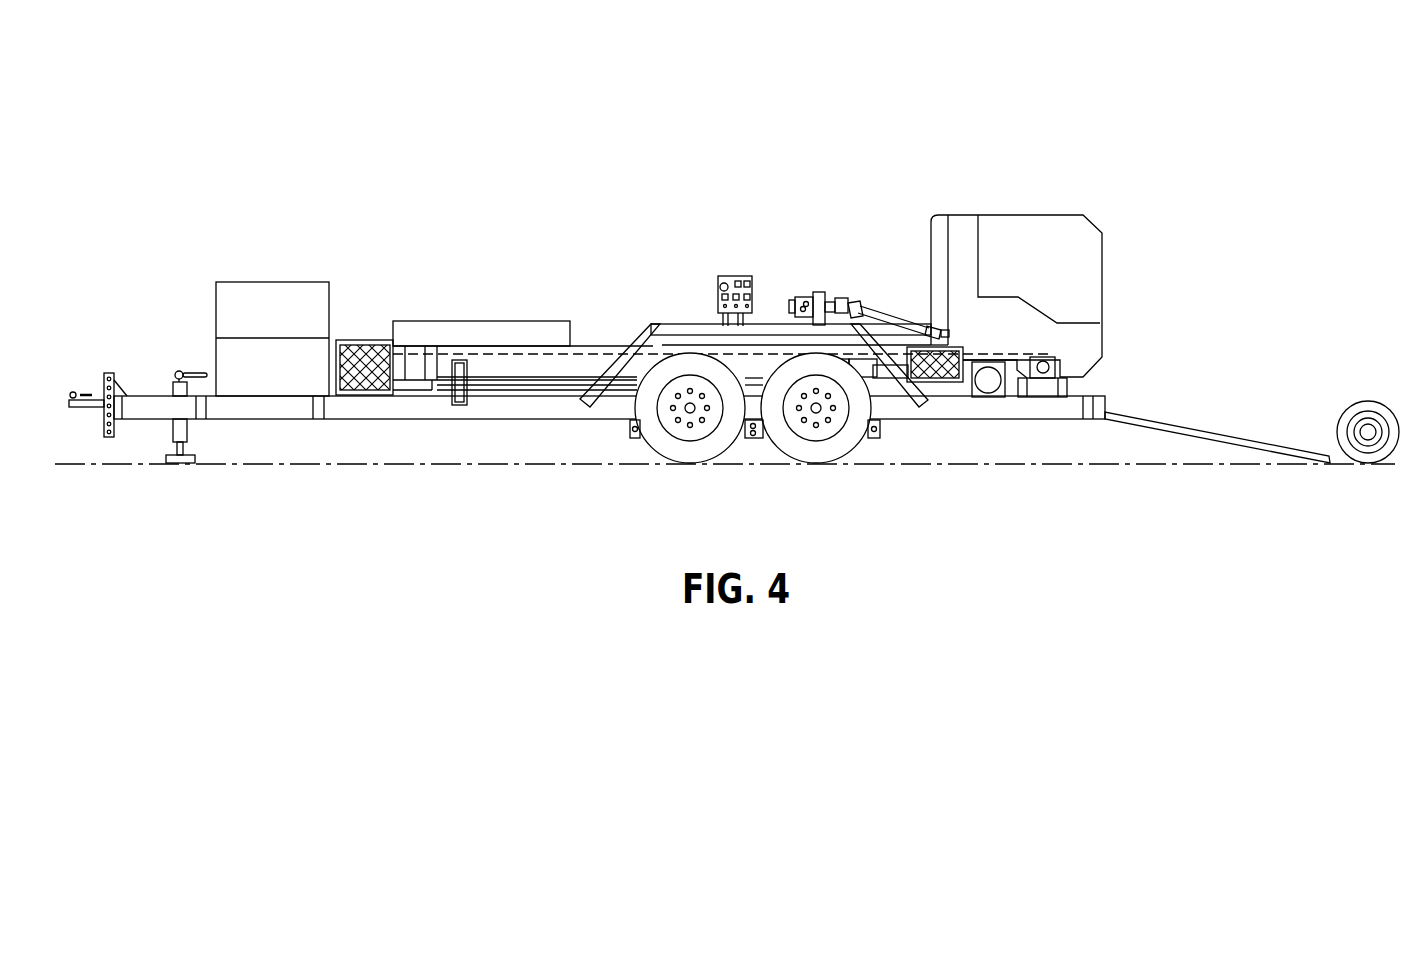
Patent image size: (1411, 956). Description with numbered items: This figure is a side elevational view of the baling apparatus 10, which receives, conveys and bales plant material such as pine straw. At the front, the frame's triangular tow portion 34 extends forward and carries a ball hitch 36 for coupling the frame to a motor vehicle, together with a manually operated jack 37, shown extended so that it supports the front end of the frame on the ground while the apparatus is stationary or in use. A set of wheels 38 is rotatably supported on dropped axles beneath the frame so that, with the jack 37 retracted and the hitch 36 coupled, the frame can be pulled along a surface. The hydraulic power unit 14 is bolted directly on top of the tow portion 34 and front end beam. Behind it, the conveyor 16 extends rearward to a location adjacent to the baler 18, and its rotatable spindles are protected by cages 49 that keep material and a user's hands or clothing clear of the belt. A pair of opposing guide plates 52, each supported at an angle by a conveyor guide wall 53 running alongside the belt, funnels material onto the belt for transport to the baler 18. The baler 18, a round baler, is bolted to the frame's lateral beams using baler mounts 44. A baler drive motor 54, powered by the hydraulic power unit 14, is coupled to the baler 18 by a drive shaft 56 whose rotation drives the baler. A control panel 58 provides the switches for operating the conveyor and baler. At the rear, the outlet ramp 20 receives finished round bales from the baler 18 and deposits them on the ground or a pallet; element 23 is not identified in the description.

The baling apparatus 10 is at (822, 117).
The hydraulic power unit 14 is at (260, 326).
The conveyor 16 is at (597, 352).
The baler 18 is at (1002, 273).
The outlet ramp 20 is at (1233, 438).
The ramp wheel 23 is at (1337, 431).
The tow portion 34 is at (141, 420).
The ball hitch 36 is at (73, 393).
The jack 37 is at (178, 382).
The wheels 38 is at (690, 448).
The baler mounts 44 is at (1047, 384).
The cages 49 is at (368, 341).
The guide plates 52 is at (485, 330).
The conveyor guide wall 53 is at (522, 365).
The baler drive motor 54 is at (800, 296).
The drive shaft 56 is at (895, 320).
The control panel 58 is at (736, 276).